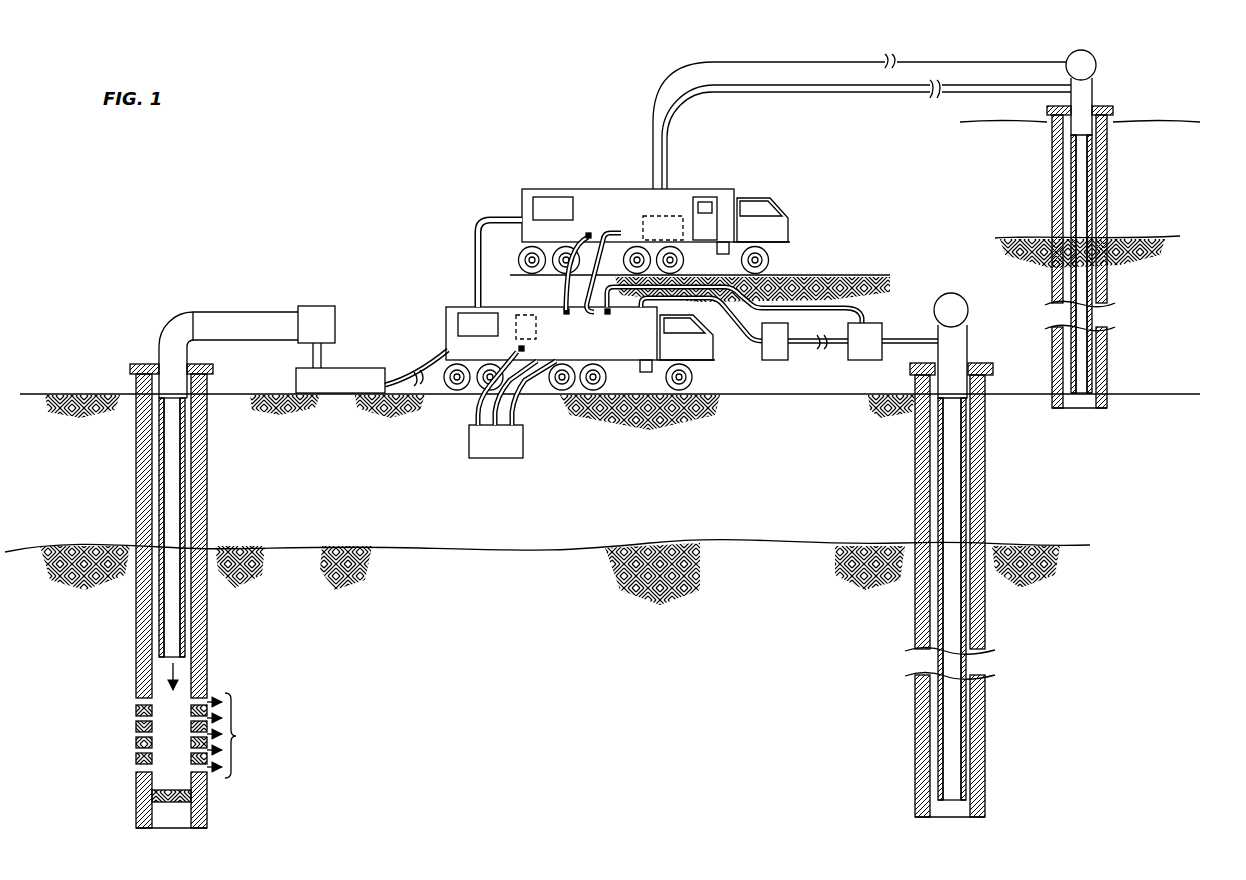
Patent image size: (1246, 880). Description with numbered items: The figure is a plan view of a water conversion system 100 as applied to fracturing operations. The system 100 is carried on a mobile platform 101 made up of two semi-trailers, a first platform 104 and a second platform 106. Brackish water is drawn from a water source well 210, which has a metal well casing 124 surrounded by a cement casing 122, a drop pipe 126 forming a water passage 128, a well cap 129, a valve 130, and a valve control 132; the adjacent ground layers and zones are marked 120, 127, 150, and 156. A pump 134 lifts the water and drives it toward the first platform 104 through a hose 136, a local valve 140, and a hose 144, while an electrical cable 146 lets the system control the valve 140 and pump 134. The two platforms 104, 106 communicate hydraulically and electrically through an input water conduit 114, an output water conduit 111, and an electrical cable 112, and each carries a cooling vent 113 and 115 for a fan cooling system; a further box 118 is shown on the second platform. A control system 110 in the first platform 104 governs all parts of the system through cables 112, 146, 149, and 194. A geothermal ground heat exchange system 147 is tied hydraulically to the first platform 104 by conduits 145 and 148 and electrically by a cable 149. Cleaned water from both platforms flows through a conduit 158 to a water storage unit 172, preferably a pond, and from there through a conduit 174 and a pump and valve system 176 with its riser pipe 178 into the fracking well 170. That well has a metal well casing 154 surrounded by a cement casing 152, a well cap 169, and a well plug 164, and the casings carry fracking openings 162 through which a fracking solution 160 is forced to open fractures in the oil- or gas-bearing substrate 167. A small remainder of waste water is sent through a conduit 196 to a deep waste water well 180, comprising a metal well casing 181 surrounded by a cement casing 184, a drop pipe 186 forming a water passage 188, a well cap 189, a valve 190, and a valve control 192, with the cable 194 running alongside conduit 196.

The water conversion system 100 is at (455, 62).
The mobile platform 101 is at (592, 108).
The first semi-trailer 104 is at (448, 305).
The second semi-trailer 106 is at (530, 190).
The control system 110 is at (516, 332).
The output water conduit 111 is at (488, 218).
The electrical cable 112 is at (566, 318).
The cooling vent 113 is at (492, 313).
The input water conduit 114 is at (603, 240).
The cooling vent 115 is at (565, 197).
The controller 118 is at (678, 216).
The wellbore 120 is at (913, 517).
The cement casing 122 is at (1035, 448).
The metal well casing 124 is at (1034, 498).
The drop pipe 126 is at (930, 478).
The zone 127 is at (1017, 778).
The water passage 128 is at (940, 440).
The well cap 129 is at (905, 370).
The valve 130 is at (968, 345).
The valve control 132 is at (957, 300).
The pump 134 is at (855, 323).
The hose 136 is at (832, 345).
The local valve 140 is at (776, 360).
The hose 144 is at (752, 340).
The conduit 145 is at (522, 405).
The electrical cable 146 is at (822, 308).
The geothermal ground heat exchange system 147 is at (512, 458).
The conduit 148 is at (482, 398).
The cable 149 is at (476, 425).
The wellbore 150 is at (135, 512).
The cement casing 152 is at (207, 430).
The metal well casing 154 is at (207, 498).
The annulus 156 is at (150, 480).
The conduit 158 is at (162, 440).
The fracking solution 160 is at (172, 672).
The fracking openings 162 is at (205, 735).
The well plug 164 is at (170, 803).
The oil- or gas-bearing substrate 167 is at (269, 783).
The well cap 169 is at (140, 365).
The fracking well 170 is at (122, 292).
The water storage unit 172 is at (343, 368).
The conduit 174 is at (313, 358).
The pump and valve system 176 is at (330, 306).
The pipe 178 is at (228, 312).
The waste water well 180 is at (1165, 50).
The metal well casing 181 is at (1108, 158).
The cement casing 184 is at (1108, 200).
The drop pipe 186 is at (1060, 200).
The water passage 188 is at (1076, 170).
The well cap 189 is at (1113, 110).
The valve 190 is at (1093, 100).
The valve control 192 is at (1092, 52).
The electrical cable 194 is at (833, 62).
The conduit 196 is at (850, 92).
The water source well 210 is at (1058, 585).